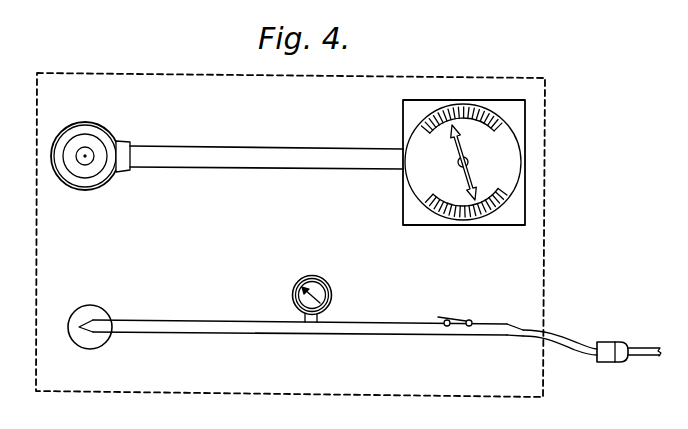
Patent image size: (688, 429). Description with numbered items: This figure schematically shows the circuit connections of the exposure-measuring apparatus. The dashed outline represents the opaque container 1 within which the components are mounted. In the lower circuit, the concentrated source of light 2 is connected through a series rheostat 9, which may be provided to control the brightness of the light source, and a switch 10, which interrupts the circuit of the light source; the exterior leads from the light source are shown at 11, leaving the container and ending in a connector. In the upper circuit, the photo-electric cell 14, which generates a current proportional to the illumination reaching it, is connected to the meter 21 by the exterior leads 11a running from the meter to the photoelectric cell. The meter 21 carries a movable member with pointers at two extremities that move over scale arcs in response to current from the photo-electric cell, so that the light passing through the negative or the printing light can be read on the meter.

The opaque container 1 is at (546, 267).
The concentrated source of light 2 is at (82, 324).
The series rheostat 9 is at (330, 289).
The switch 10 is at (464, 318).
The exterior leads from the light source 11 is at (578, 341).
The exterior leads from the meter to the photoelectric cell 11a is at (267, 165).
The photo-electric cell 14 is at (107, 136).
The meter 21 is at (402, 204).